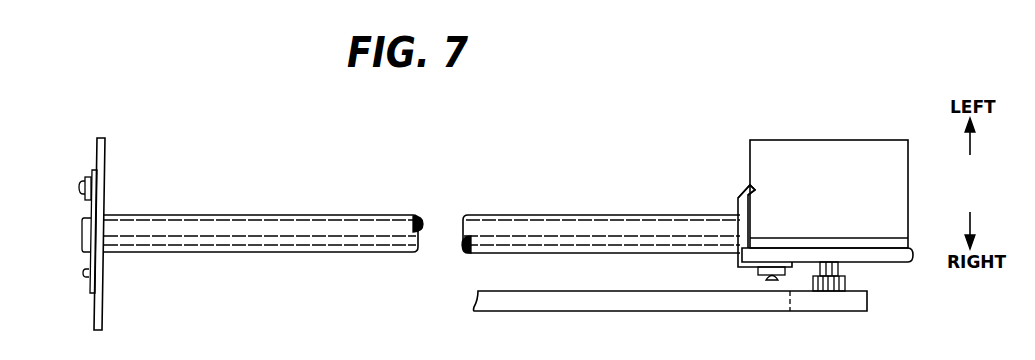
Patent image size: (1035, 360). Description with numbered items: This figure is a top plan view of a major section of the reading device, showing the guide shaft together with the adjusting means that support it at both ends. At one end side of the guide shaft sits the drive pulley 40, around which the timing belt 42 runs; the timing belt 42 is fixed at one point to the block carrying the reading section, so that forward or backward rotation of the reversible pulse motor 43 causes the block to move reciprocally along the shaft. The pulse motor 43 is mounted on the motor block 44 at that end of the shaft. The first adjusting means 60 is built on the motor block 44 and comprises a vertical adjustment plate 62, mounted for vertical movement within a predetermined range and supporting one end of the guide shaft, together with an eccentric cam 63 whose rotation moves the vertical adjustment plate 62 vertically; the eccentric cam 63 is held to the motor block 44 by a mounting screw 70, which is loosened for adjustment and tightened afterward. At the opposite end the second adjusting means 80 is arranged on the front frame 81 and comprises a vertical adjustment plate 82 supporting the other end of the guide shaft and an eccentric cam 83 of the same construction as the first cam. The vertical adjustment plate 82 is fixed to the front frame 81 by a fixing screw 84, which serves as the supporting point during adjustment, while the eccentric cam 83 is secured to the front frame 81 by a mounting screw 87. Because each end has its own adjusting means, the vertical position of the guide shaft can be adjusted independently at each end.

The drive pulley 40 is at (832, 300).
The timing belt 42 is at (588, 300).
The reversible pulse motor 43 is at (840, 148).
The motor block 44 is at (913, 255).
The first adjusting means 60 is at (732, 274).
The vertical adjustment plate 62 is at (738, 200).
The eccentric cam 63 is at (757, 275).
The mounting screw 70 is at (771, 280).
The second adjusting means 80 is at (80, 243).
The front frame 81 is at (104, 160).
The vertical adjustment plate 82 is at (91, 172).
The eccentric cam 83 is at (85, 200).
The fixing screw 84 is at (88, 277).
The mounting screw 87 is at (80, 188).